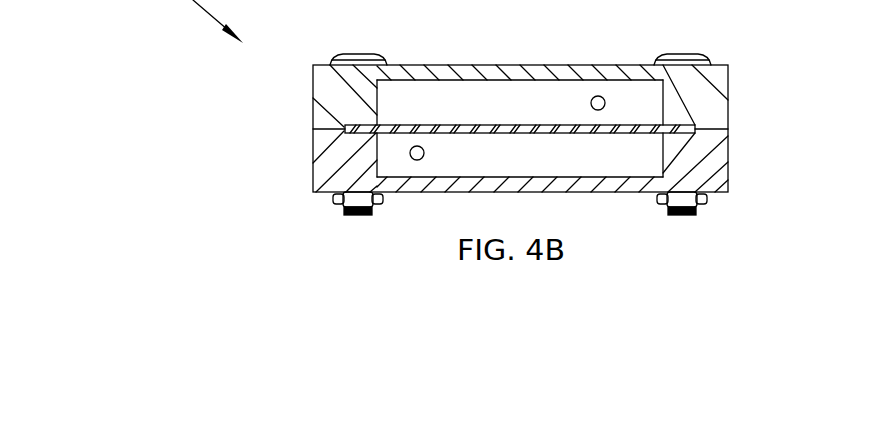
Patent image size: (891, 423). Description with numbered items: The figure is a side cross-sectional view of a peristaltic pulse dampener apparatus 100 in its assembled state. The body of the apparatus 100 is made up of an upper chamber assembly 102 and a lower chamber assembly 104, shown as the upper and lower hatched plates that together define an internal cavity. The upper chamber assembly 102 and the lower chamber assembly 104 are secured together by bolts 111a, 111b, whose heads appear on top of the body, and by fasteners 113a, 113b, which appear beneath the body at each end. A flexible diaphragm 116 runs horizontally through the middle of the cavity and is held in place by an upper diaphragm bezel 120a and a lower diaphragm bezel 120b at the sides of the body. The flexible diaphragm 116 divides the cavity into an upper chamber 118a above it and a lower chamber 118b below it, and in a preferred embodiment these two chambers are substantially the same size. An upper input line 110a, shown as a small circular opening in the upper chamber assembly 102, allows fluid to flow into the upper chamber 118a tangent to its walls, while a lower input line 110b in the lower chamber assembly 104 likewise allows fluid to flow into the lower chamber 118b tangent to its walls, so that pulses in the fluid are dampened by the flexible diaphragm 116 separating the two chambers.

The peristaltic pulse dampener apparatus 100 is at (218, 21).
The upper chamber assembly 102 is at (428, 65).
The lower chamber assembly 104 is at (617, 186).
The upper input line 110a is at (599, 96).
The lower input line 110b is at (416, 161).
The bolt 111a is at (358, 59).
The bolt 111b is at (692, 54).
The fastener 113a is at (336, 205).
The fastener 113b is at (707, 203).
The flexible diaphragm 116 is at (697, 124).
The upper chamber 118a is at (513, 103).
The lower chamber 118b is at (527, 165).
The upper diaphragm bezel 120a is at (357, 125).
The lower diaphragm bezel 120b is at (357, 133).